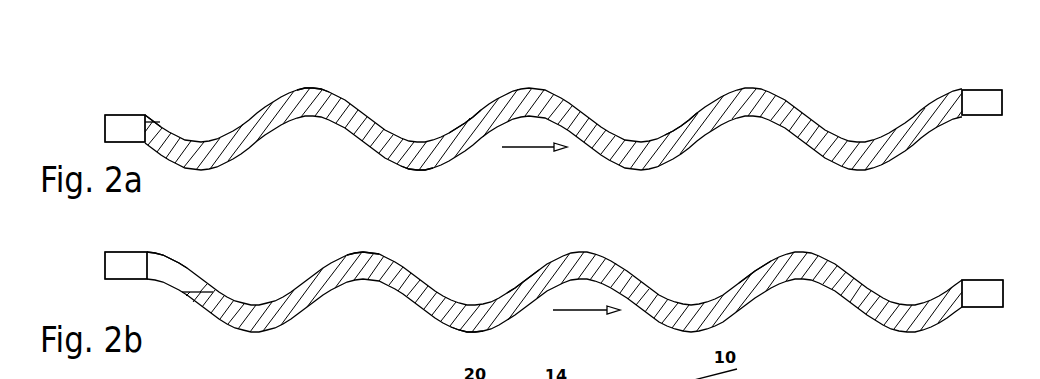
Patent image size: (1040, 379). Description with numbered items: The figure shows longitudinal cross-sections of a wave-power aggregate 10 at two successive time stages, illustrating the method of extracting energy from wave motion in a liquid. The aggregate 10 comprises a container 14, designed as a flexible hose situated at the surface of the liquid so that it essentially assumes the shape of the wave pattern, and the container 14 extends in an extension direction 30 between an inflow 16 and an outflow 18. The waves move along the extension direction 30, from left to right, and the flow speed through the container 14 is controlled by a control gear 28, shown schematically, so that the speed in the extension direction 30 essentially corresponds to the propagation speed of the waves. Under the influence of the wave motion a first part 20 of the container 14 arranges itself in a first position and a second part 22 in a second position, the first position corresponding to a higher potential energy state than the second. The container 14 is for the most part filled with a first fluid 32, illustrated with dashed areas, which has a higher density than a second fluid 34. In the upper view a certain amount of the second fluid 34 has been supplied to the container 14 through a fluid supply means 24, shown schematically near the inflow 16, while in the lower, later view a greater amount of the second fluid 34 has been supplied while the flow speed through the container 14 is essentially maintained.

In FIG. 2A, the wave-power aggregate 10 is at (640, 81).
In FIG. 2B, the wave-power aggregate 10 is at (593, 243).
In FIG. 2A, the container 14 is at (465, 118).
In FIG. 2B, the container 14 is at (527, 278).
In FIG. 2A, the inflow 16 is at (125, 128).
In FIG. 2B, the inflow 16 is at (124, 265).
In FIG. 2A, the outflow 18 is at (981, 101).
In FIG. 2B, the outflow 18 is at (978, 290).
In FIG. 2A, the first part 20 is at (311, 88).
In FIG. 2B, the first part 20 is at (363, 250).
In FIG. 2A, the second part 22 is at (419, 170).
In FIG. 2B, the second part 22 is at (468, 333).
In FIG. 2A, the fluid supply means 24 is at (118, 128).
In FIG. 2B, the fluid supply means 24 is at (120, 265).
In FIG. 2A, the control gear 28 is at (984, 100).
In FIG. 2B, the control gear 28 is at (980, 290).
In FIG. 2A, the extension direction 30 is at (534, 158).
In FIG. 2B, the extension direction 30 is at (586, 320).
In FIG. 2A, the first fluid 32 is at (678, 137).
In FIG. 2B, the first fluid 32 is at (760, 285).
In FIG. 2A, the second fluid 34 is at (157, 121).
In FIG. 2B, the second fluid 34 is at (170, 270).